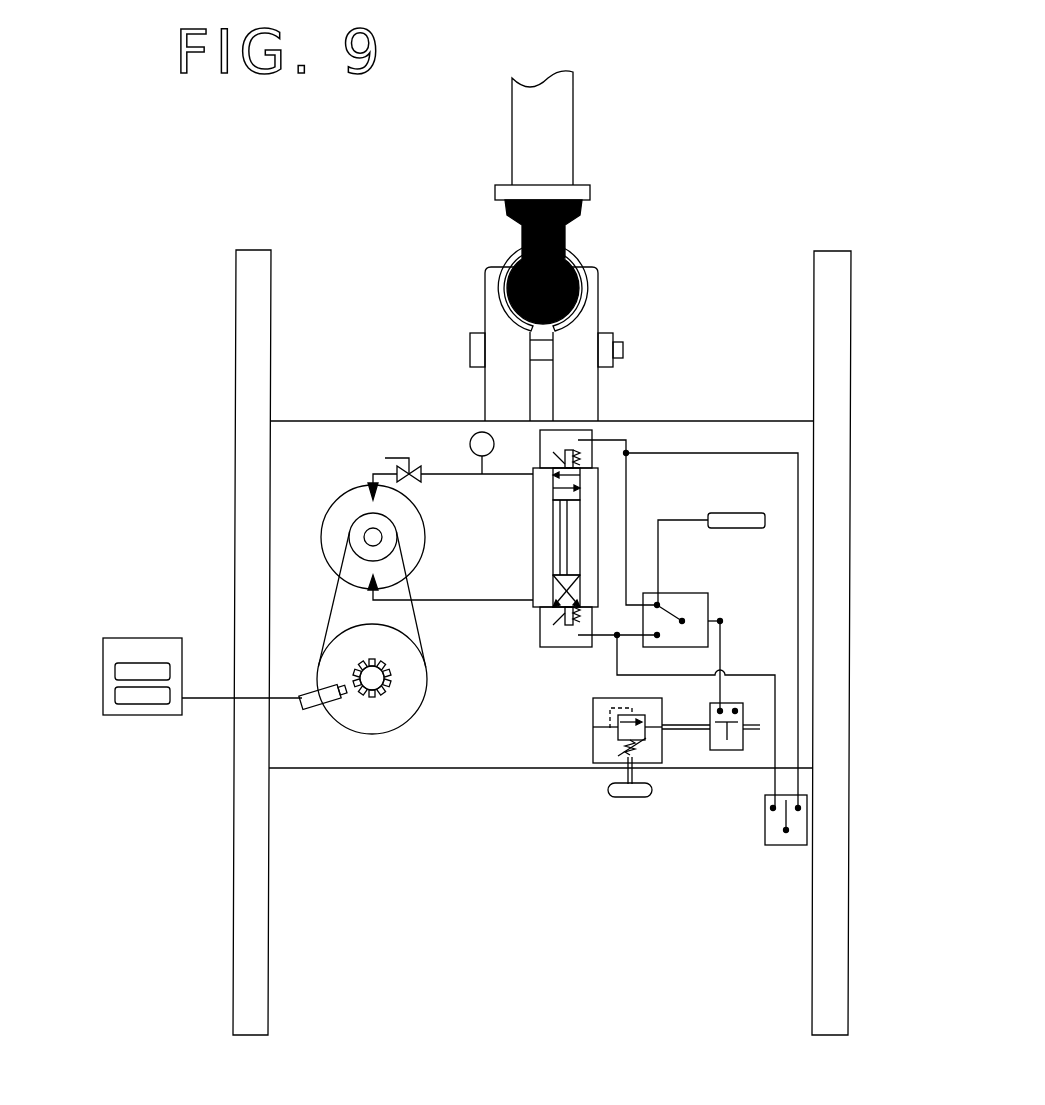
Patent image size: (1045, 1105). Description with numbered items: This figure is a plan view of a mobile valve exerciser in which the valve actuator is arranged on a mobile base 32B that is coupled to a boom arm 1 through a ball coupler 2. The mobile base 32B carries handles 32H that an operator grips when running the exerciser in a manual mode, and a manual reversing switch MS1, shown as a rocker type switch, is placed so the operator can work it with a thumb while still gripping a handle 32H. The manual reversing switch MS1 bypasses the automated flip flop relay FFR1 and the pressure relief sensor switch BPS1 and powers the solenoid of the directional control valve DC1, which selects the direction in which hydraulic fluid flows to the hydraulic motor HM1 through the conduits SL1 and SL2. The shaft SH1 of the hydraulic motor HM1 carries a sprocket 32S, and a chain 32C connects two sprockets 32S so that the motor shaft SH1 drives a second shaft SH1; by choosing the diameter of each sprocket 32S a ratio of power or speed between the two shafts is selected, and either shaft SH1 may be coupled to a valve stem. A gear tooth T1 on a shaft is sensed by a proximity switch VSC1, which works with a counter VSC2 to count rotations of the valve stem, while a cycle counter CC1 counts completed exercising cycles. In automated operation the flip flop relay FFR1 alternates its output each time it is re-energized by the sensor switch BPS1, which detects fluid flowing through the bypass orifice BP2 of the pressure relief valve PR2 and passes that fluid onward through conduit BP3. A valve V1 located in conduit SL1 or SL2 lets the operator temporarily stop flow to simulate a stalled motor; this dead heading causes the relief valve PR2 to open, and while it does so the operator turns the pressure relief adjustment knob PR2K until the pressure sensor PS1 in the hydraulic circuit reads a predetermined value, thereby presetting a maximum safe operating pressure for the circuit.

The boom arm 1 is at (555, 92).
The ball coupler 2 is at (522, 253).
The handle 32H is at (242, 938).
The mobile base 32B is at (378, 770).
The sprocket 32S is at (357, 527).
The chain 32C is at (412, 615).
The shaft SH1 is at (372, 535).
The hydraulic motor HM1 is at (328, 550).
The gear tooth T1 is at (355, 672).
The proximity switch VSC1 is at (303, 703).
The counter means VSC2 is at (137, 637).
The valve V1 is at (419, 471).
The pressure sensor PS1 is at (478, 432).
The conduit SL1 is at (502, 476).
The conduit SL2 is at (500, 598).
The directional control valve DC1 is at (585, 513).
The cycle counter CC1 is at (765, 520).
The flip flop relay FFR1 is at (700, 609).
The pressure relief valve PR2 is at (598, 750).
The pressure relief adjustment knob PR2K is at (607, 788).
The bypass orifice BP2 is at (699, 722).
The conduit BP3 is at (760, 724).
The sensor switch BPS1 is at (731, 745).
The manual reversing switch MS1 is at (780, 845).